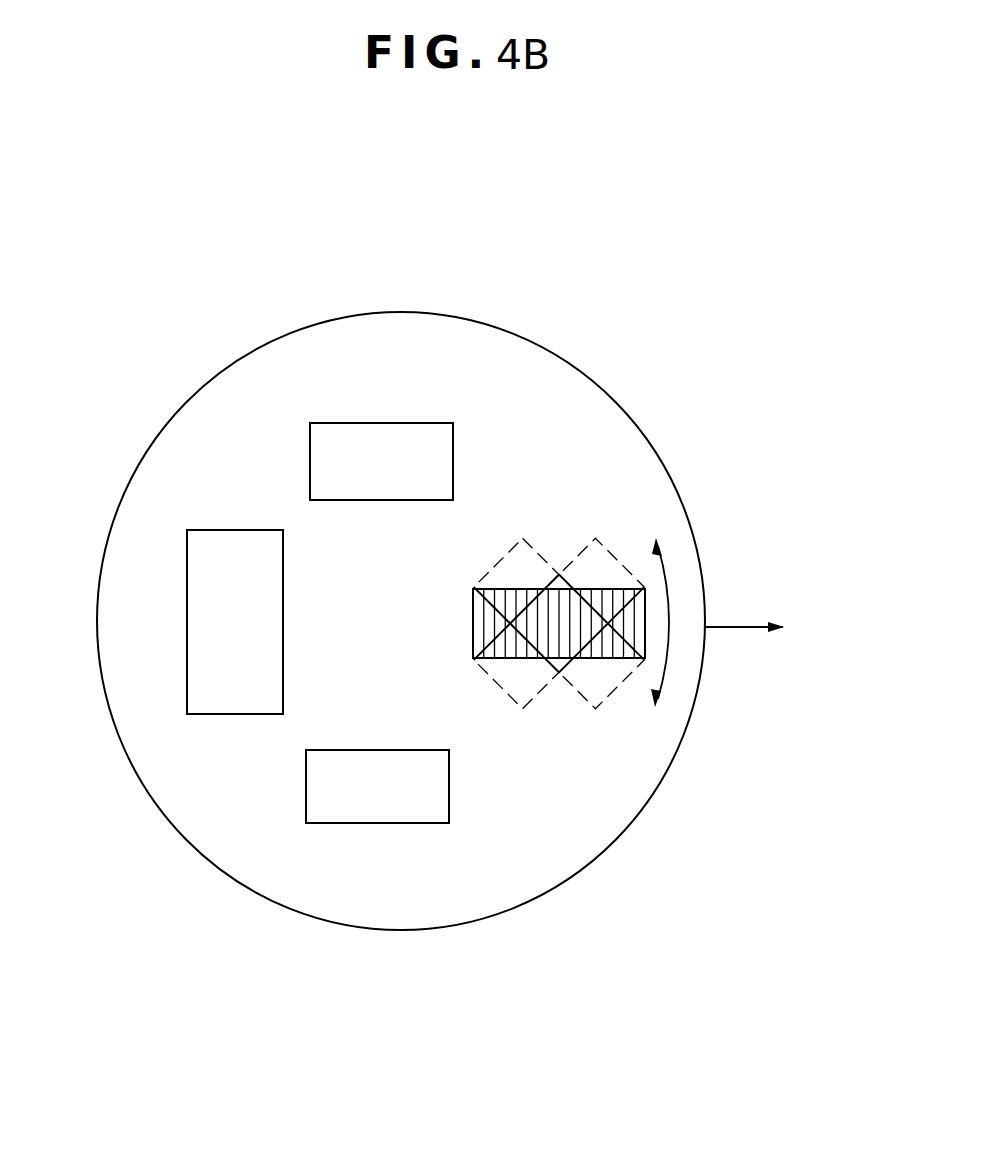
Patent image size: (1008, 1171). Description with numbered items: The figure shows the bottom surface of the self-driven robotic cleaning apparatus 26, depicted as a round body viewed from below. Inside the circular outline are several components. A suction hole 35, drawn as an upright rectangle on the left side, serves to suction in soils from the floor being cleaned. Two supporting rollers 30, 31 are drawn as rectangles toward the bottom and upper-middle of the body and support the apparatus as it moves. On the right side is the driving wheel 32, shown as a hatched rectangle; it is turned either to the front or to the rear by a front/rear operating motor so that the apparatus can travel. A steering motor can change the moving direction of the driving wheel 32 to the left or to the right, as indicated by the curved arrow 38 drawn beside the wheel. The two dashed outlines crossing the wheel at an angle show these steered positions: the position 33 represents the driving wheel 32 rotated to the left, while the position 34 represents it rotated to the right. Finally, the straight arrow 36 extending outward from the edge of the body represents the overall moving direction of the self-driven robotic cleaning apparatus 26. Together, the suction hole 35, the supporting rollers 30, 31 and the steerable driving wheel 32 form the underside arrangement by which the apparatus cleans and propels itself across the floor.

The self-driven robotic cleaning apparatus 26 is at (176, 410).
The supporting roller 30 is at (376, 803).
The supporting roller 31 is at (437, 447).
The driving wheel 32 is at (620, 615).
The position when the driving wheel is rotated to the left 33 is at (600, 562).
The position when the driving wheel is rotated to the right 34 is at (603, 687).
The suction hole 35 is at (208, 642).
The arrow representing moving direction 36 is at (743, 628).
The arrow indicating steering direction 38 is at (667, 668).